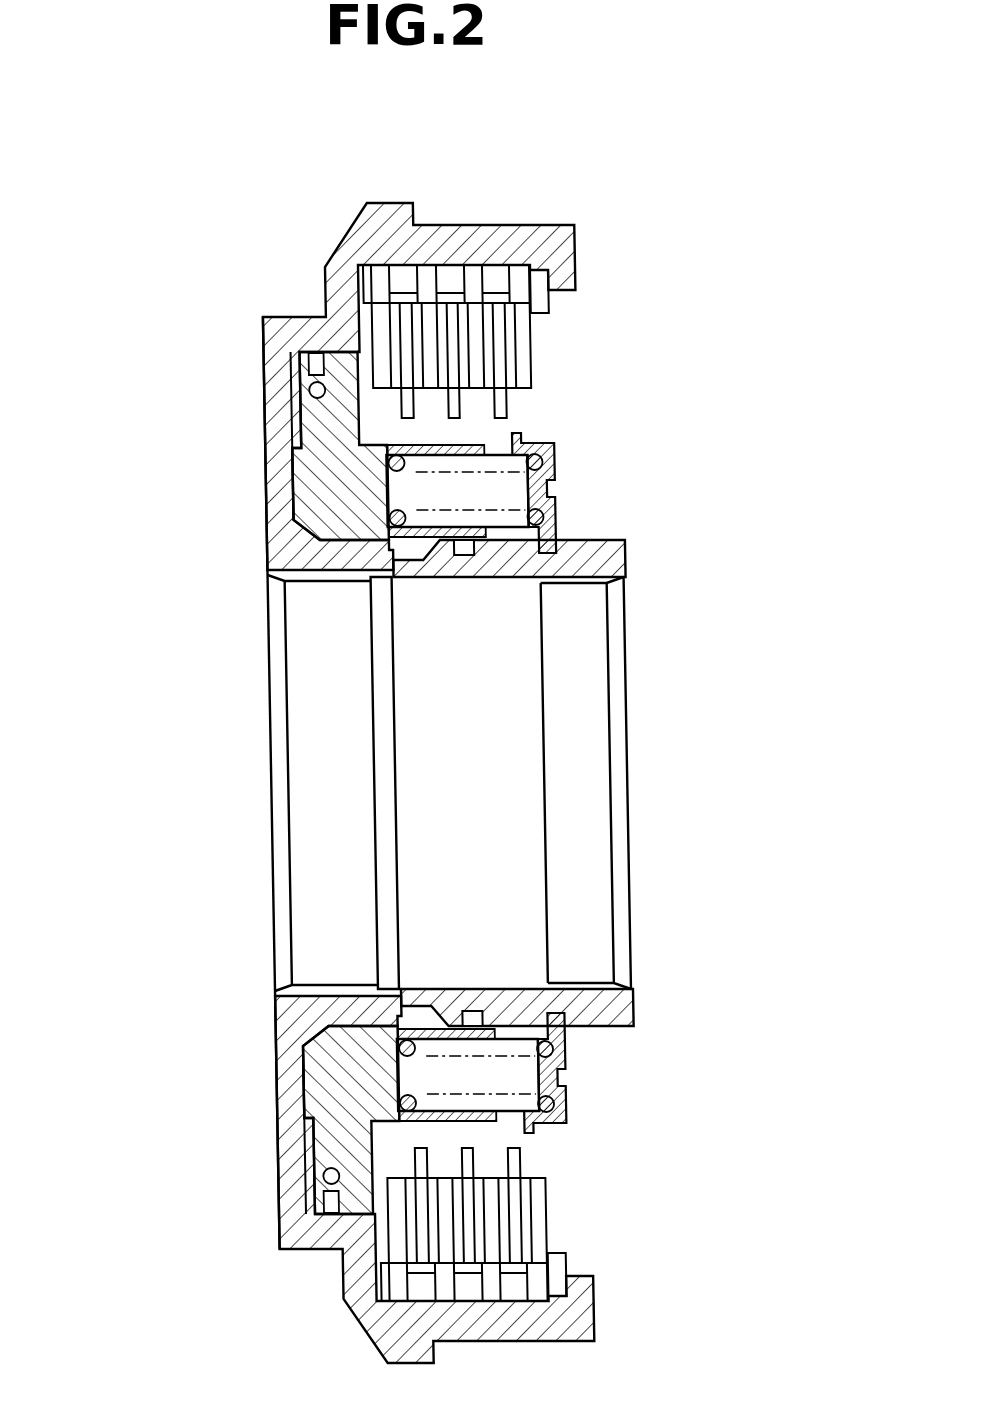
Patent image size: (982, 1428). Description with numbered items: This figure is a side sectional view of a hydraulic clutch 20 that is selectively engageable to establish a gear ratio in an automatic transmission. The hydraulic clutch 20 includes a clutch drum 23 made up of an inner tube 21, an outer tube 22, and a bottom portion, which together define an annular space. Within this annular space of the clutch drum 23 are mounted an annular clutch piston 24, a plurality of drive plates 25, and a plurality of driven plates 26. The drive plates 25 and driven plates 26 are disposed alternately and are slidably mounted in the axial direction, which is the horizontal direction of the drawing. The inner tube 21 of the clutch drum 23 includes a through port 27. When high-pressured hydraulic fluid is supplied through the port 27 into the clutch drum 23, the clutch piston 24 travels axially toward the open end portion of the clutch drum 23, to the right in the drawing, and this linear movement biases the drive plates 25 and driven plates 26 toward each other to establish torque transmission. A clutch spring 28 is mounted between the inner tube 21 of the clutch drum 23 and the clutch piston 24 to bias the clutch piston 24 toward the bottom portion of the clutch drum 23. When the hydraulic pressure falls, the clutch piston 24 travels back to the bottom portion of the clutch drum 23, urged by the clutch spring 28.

The hydraulic clutch 20 is at (202, 683).
The inner tube 21 is at (627, 553).
The outer tube 22 is at (578, 247).
The clutch drum 23 is at (271, 440).
The clutch piston 24 is at (315, 485).
The drive plates 25 is at (500, 405).
The driven plates 26 is at (523, 347).
The through port 27 is at (437, 571).
The clutch spring 28 is at (565, 1096).